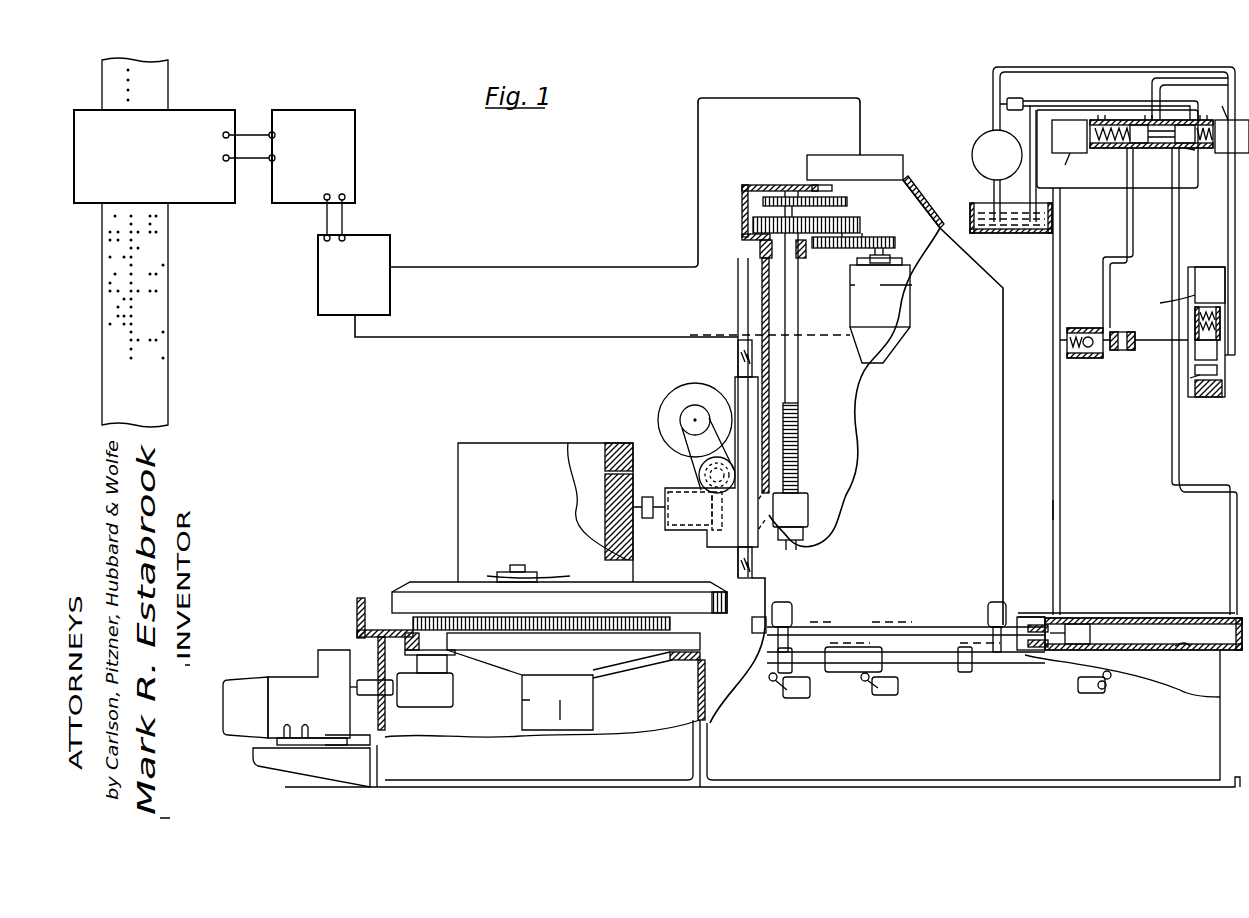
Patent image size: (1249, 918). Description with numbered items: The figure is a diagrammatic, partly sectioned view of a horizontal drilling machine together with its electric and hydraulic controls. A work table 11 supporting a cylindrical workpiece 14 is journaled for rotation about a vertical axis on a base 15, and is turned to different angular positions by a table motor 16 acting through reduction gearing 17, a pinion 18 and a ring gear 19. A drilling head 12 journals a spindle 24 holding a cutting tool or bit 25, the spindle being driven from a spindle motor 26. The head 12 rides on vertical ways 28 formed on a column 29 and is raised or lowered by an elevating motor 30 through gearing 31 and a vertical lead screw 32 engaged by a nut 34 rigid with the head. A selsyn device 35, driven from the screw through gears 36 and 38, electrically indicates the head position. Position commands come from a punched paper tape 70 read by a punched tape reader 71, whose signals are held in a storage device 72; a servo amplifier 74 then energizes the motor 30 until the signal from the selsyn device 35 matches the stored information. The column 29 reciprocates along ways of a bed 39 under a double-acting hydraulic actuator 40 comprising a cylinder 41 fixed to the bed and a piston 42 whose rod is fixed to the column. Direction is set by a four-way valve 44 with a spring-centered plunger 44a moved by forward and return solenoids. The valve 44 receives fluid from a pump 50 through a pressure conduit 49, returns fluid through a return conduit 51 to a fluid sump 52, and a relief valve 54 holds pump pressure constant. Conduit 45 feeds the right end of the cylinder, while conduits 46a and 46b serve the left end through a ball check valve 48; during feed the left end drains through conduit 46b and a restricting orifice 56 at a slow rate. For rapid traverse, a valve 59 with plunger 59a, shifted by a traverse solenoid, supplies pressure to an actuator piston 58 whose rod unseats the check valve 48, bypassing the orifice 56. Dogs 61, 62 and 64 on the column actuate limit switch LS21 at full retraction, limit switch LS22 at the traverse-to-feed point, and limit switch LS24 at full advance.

The punched paper tape 70 is at (168, 88).
The punched tape reader 71 is at (222, 112).
The storage device 72 is at (336, 110).
The servo amplifier 74 is at (390, 247).
The selsyn device 35 is at (885, 155).
The gear 36 is at (776, 197).
The gear 38 is at (848, 202).
The gearing 31 is at (866, 226).
The elevating motor 30 is at (850, 320).
The column 29 is at (738, 318).
The vertical ways 28 is at (738, 368).
The vertical lead screw 32 is at (800, 420).
The nut 34 is at (808, 505).
The spindle motor 26 is at (658, 412).
The drilling head 12 is at (707, 542).
The spindle 24 is at (648, 495).
The cutting tool or bit 25 is at (604, 507).
The workpiece 14 is at (458, 520).
The work table 11 is at (423, 582).
The ring gear 19 is at (500, 617).
The pinion 18 is at (413, 624).
The table motor 16 is at (310, 676).
The reduction gearing 17 is at (453, 697).
The base 15 is at (453, 778).
The bed 39 is at (985, 778).
The dog 61 is at (972, 662).
The dog 62 is at (852, 672).
The dog 64 is at (784, 670).
The limit switch LS24 is at (797, 698).
The limit switch LS22 is at (885, 695).
The limit switch LS21 is at (1090, 693).
The double-acting hydraulic actuator 40 is at (1180, 618).
The cylinder 41 is at (1188, 650).
The piston 42 is at (1155, 600).
The pressure conduit 49 is at (1148, 67).
The relief valve 54 is at (1018, 98).
The pump 50 is at (985, 140).
The fluid sump 52 is at (1028, 233).
The return conduit 51 is at (1100, 120).
The four-way valve 44 is at (1173, 118).
The spring-centered plunger 44a is at (1190, 150).
The restricting orifice 56 is at (1060, 280).
The conduit 46a is at (1105, 303).
The conduit 46b is at (1060, 510).
The conduit 45 is at (1172, 265).
The ball check valve 48 is at (1083, 352).
The actuator piston 58 is at (1125, 352).
The valve 59 is at (1207, 397).
The plunger 59a is at (1195, 375).